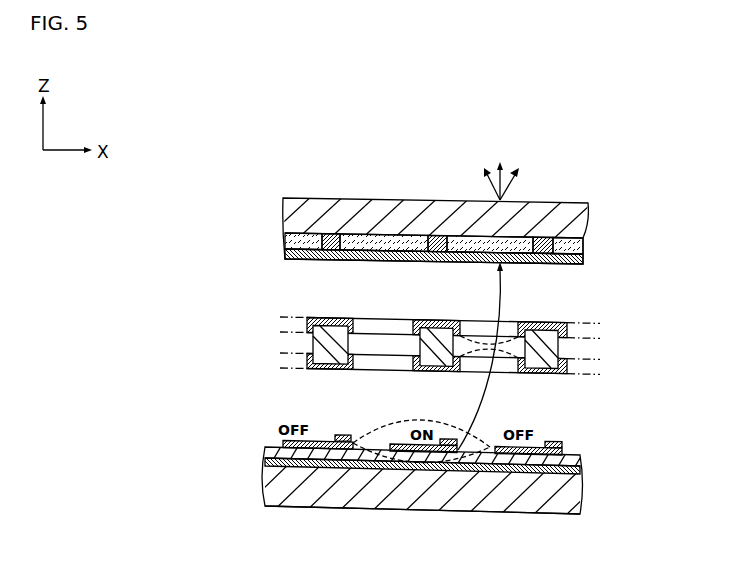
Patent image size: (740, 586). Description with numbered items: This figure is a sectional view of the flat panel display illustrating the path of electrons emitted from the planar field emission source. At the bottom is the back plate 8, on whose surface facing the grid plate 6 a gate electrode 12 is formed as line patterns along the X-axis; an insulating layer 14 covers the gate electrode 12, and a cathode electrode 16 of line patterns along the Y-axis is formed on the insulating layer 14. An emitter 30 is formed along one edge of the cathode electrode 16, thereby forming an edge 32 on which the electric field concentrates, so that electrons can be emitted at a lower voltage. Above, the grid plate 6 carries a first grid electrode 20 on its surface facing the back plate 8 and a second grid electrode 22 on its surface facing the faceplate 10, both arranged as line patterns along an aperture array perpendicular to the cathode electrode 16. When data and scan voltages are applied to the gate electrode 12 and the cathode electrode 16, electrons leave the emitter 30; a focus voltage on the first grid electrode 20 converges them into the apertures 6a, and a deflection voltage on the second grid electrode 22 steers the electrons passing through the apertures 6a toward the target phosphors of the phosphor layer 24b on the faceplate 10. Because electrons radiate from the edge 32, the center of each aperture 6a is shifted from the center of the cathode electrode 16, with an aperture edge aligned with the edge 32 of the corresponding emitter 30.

The faceplate 10 is at (448, 205).
The phosphor layer 24b is at (567, 242).
The grid plate 6 is at (451, 352).
The aperture 6a is at (373, 338).
The second grid electrode 22 is at (560, 322).
The first grid electrode 20 is at (564, 378).
The emitter 30 is at (334, 437).
The edge 32 is at (353, 442).
The cathode electrode 16 is at (283, 441).
The insulating layer 14 is at (580, 461).
The gate electrode 12 is at (427, 502).
The back plate 8 is at (443, 510).